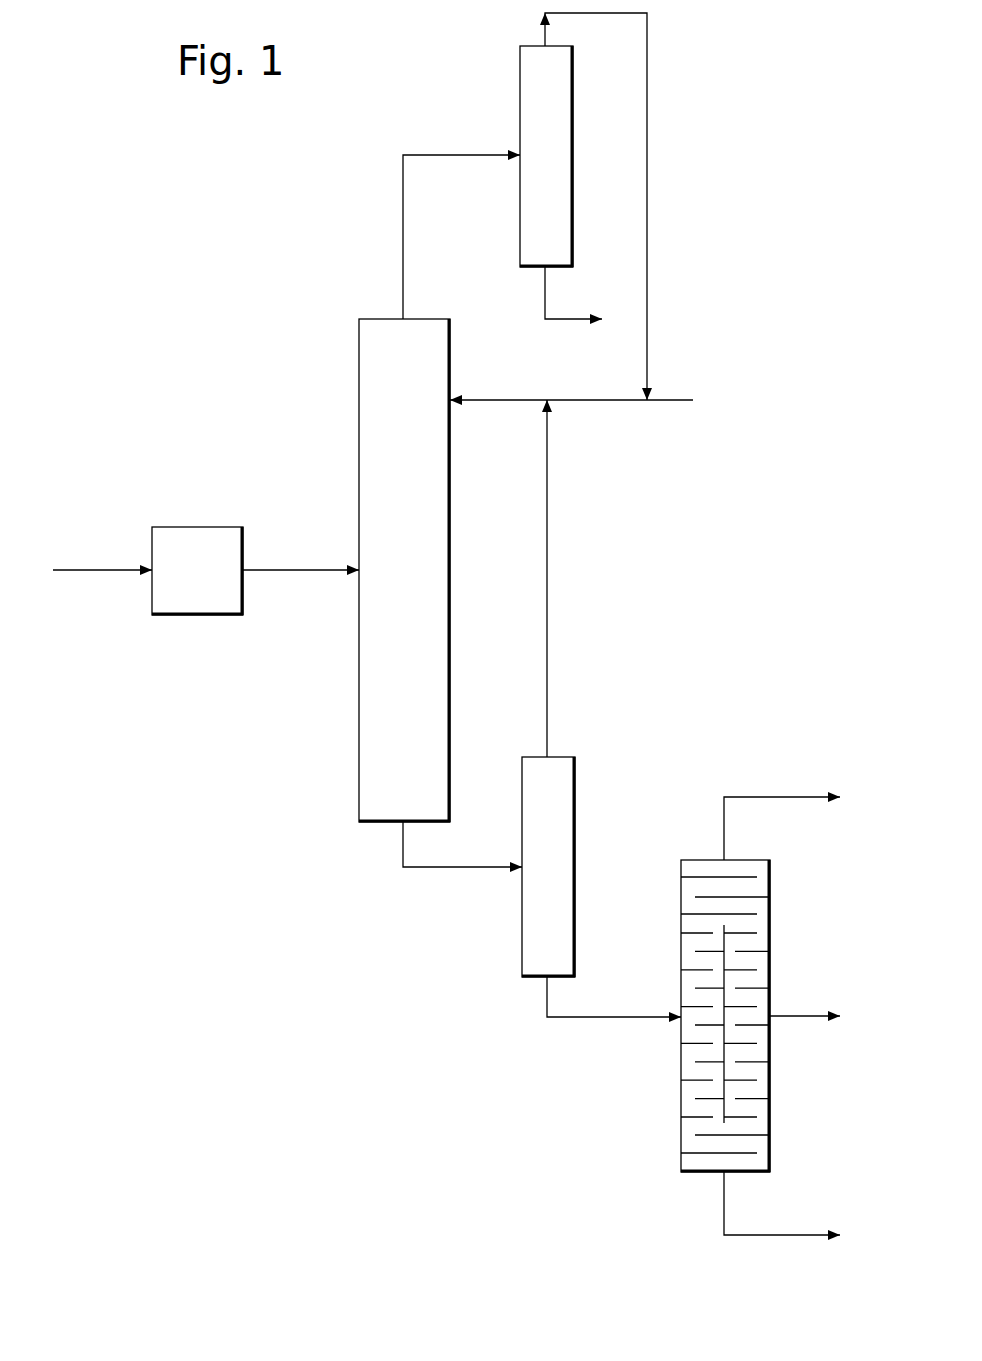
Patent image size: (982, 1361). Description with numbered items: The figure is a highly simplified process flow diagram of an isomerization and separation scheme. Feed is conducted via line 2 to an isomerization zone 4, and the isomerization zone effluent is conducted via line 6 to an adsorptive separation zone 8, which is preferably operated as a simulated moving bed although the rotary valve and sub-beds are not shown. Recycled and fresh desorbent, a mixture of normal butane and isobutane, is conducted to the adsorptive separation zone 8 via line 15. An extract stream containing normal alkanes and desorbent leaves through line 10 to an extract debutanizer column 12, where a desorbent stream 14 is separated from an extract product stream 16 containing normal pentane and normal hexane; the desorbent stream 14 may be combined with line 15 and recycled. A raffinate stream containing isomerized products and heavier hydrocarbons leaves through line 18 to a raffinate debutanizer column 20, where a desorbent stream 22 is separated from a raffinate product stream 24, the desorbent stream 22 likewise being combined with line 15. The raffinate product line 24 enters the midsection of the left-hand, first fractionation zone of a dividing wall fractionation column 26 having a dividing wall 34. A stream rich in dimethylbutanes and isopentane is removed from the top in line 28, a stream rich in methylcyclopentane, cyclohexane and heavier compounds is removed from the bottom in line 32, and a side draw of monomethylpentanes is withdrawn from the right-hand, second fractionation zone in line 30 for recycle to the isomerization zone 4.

The feed line 2 is at (99, 568).
The isomerization zone 4 is at (210, 584).
The isomerization zone effluent line 6 is at (297, 568).
The adsorptive separation zone 8 is at (412, 578).
The extract stream line 10 is at (403, 258).
The extract debutanizer column 12 is at (520, 88).
The desorbent stream 14 is at (647, 72).
The desorbent line 15 is at (492, 398).
The extract product stream 16 is at (545, 293).
The raffinate stream line 18 is at (457, 868).
The raffinate debutanizer column 20 is at (575, 805).
The desorbent stream 22 is at (547, 560).
The raffinate product line 24 is at (606, 1018).
The dividing wall fractionation column 26 is at (757, 906).
The overhead line 28 is at (795, 796).
The side draw line 30 is at (797, 1014).
The bottoms line 32 is at (779, 1234).
The dividing wall 34 is at (725, 1073).